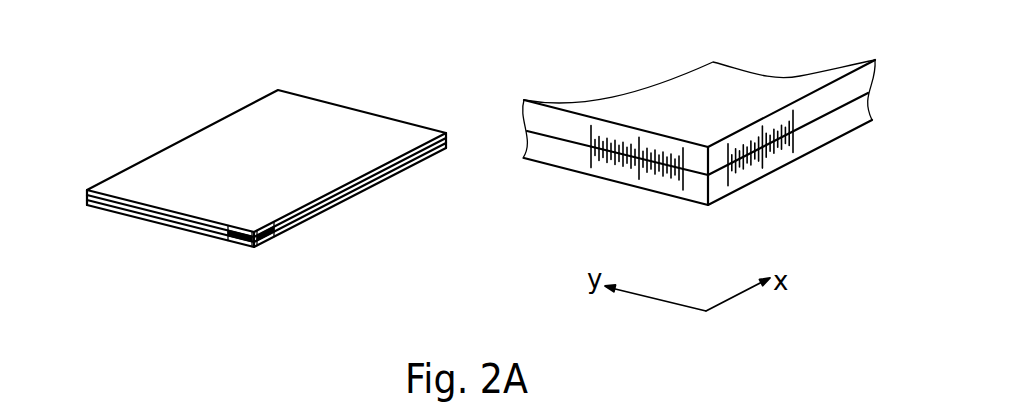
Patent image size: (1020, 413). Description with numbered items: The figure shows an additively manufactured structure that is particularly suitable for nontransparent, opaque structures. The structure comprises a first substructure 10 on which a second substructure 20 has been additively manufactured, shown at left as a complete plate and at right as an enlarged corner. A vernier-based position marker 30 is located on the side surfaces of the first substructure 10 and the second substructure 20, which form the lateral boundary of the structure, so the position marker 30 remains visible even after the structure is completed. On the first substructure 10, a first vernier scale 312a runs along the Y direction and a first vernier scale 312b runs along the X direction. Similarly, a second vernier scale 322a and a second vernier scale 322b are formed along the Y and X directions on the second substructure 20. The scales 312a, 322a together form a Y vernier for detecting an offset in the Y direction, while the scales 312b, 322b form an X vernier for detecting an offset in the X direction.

The first substructure 10 is at (130, 218).
The second substructure 20 is at (160, 181).
The vernier-based position marker 30 is at (276, 235).
The first vernier scale 312a is at (652, 172).
The first vernier scale 312b is at (770, 165).
The second vernier scale 322a is at (612, 143).
The second vernier scale 322b is at (780, 130).